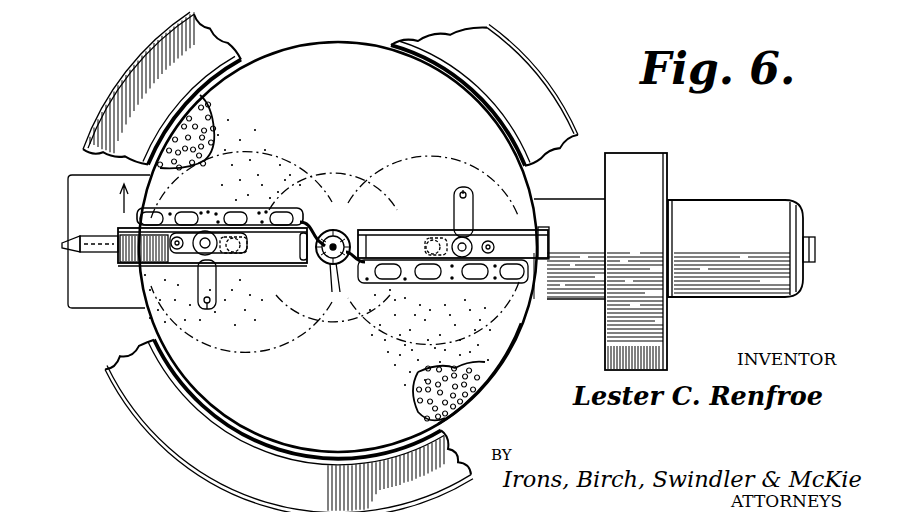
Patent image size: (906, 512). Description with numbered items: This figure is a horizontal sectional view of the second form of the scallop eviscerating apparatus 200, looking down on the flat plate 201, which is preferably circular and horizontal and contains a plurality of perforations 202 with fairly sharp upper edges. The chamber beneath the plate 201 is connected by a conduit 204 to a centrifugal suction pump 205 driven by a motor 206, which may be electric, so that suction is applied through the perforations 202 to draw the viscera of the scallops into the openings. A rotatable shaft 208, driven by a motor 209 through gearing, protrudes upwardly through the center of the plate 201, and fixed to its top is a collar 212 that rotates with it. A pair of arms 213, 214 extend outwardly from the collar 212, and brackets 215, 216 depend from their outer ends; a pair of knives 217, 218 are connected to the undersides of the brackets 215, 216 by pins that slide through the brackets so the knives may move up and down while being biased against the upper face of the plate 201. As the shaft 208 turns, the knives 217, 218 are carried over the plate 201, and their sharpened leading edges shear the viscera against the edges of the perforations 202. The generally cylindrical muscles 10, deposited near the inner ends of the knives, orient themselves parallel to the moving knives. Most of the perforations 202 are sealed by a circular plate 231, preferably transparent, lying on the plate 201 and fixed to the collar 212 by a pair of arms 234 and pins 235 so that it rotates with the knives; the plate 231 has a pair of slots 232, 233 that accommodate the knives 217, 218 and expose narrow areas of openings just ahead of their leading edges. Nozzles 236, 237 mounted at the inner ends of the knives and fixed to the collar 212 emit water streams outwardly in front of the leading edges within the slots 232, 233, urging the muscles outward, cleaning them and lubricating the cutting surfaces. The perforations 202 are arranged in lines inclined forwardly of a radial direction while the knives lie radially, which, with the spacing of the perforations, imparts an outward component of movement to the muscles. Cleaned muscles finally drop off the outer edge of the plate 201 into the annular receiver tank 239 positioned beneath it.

The muscles 10 is at (163, 215).
The apparatus 200 is at (583, 122).
The flat plate 201 is at (455, 405).
The perforations 202 is at (170, 122).
The conduit 204 is at (569, 259).
The centrifugal suction pump 205 is at (663, 172).
The motor 206 is at (762, 212).
The rotatable shaft 208 is at (338, 233).
The motor 209 is at (112, 204).
The collar 212 is at (336, 292).
The arm 213 is at (300, 266).
The arm 214 is at (416, 233).
The bracket 215 is at (185, 266).
The bracket 216 is at (478, 240).
The knife 217 is at (120, 263).
The knife 218 is at (541, 230).
The circular plate 231 is at (497, 367).
The slot 232 is at (335, 252).
The slot 233 is at (537, 292).
The arms 234 is at (195, 275).
The pins 235 is at (210, 305).
The nozzle 236 is at (320, 230).
The nozzle 237 is at (374, 235).
The annular receiver tank 239 is at (515, 68).